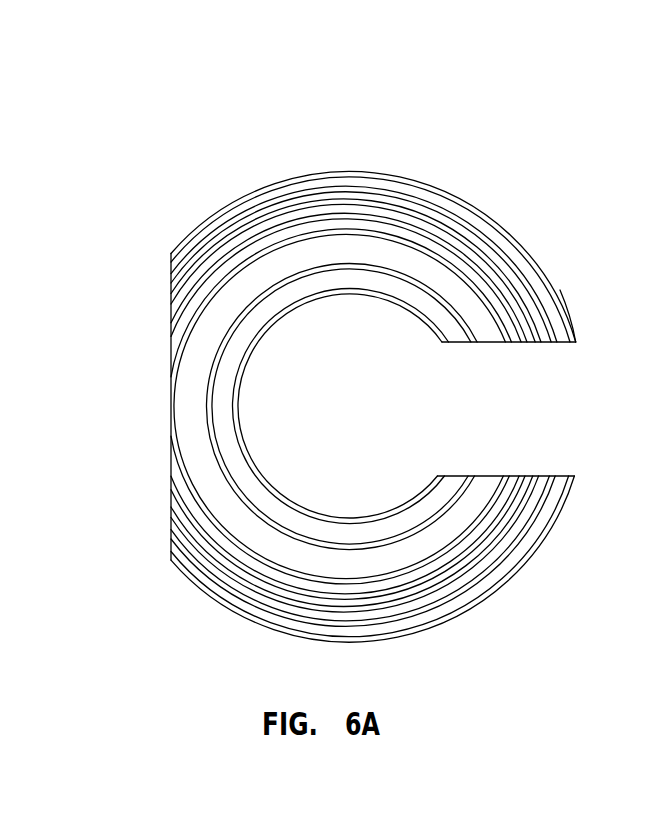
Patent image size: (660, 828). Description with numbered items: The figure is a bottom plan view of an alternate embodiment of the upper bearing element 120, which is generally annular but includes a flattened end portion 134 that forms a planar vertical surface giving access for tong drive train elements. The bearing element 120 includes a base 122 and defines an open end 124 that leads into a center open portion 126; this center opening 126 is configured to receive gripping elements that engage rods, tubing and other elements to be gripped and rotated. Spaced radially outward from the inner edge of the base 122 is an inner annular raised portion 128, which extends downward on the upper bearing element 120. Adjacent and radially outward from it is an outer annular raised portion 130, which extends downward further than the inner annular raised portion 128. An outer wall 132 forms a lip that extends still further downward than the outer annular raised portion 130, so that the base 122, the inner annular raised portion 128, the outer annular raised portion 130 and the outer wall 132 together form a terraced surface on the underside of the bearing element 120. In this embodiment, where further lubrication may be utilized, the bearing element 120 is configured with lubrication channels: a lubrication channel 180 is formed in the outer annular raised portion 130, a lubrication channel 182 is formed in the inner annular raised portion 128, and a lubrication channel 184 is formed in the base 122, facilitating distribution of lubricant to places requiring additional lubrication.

The upper bearing element 120 is at (378, 339).
The base 122 is at (428, 300).
The open end 124 is at (549, 410).
The center open portion 126 is at (358, 430).
The inner annular raised portion 128 is at (509, 342).
The outer annular raised portion 130 is at (538, 479).
The outer wall 132 is at (576, 342).
The flattened end portion 134 is at (171, 363).
The lubrication channel 180 is at (350, 192).
The lubrication channel 182 is at (348, 224).
The lubrication channel 184 is at (350, 267).